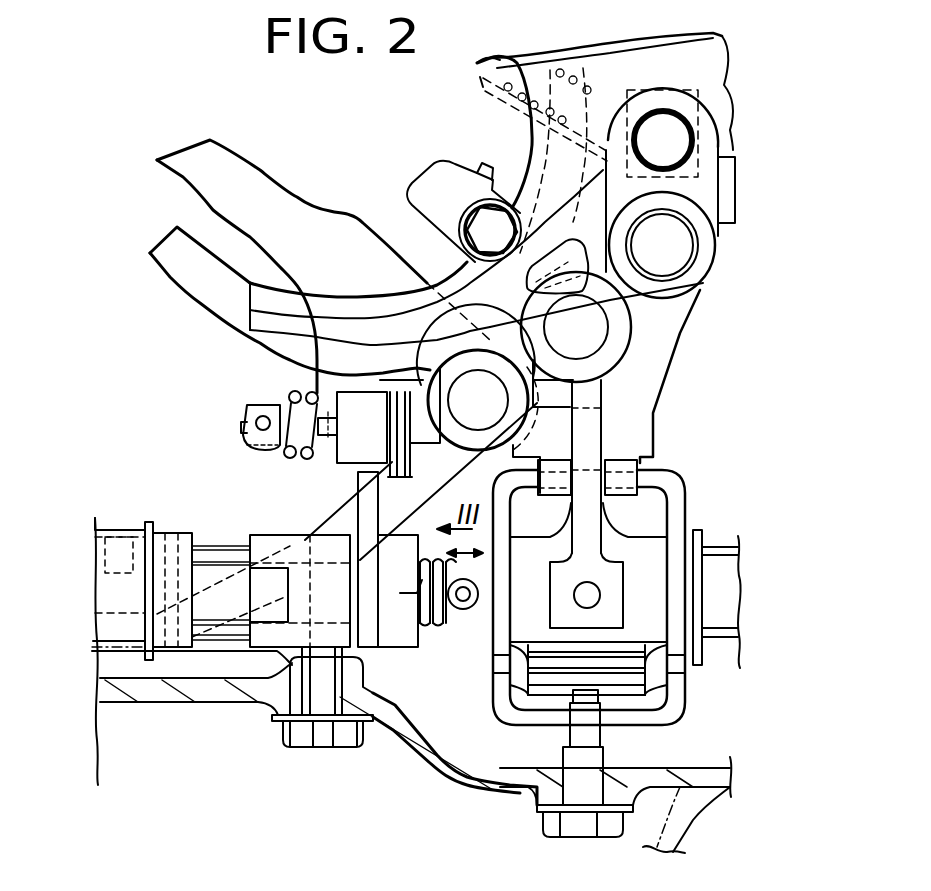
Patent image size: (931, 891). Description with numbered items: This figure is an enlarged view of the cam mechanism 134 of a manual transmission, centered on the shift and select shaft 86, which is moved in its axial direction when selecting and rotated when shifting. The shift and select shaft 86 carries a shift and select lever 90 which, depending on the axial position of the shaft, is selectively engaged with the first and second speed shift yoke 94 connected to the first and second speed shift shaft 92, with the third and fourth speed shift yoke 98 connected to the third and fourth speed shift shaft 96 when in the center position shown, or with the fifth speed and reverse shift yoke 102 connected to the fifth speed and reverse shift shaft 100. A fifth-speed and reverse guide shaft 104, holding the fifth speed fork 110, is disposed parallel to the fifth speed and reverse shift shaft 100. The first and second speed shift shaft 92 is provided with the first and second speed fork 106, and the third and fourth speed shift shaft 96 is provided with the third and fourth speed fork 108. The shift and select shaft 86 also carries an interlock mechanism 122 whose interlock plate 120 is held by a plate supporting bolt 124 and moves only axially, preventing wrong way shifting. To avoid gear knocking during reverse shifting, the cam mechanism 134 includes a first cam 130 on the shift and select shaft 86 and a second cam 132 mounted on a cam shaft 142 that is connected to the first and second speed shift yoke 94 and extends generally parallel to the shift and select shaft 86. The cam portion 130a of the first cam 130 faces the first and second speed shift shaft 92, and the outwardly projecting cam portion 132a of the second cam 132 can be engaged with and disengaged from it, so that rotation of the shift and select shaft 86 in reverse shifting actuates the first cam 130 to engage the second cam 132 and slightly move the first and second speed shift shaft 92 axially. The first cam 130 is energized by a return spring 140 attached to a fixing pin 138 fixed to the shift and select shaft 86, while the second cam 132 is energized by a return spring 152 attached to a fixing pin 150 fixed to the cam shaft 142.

The shift and select shaft 86 is at (227, 600).
The shift and select lever 90 is at (590, 447).
The 1st and 2nd speed shift shaft 92 is at (477, 395).
The 1st and 2nd speed shift yoke 94 is at (605, 458).
The 3rd and 4th speed shift shaft 96 is at (580, 333).
The 3rd and 4th speed shift yoke 98 is at (587, 402).
The 5th speed and reverse shift shaft 100 is at (663, 245).
The 5th speed and reverse shift yoke 102 is at (640, 463).
The 5th-speed and reverse guide shaft 104 is at (663, 139).
The 1st and 2nd speed fork 106 is at (200, 163).
The 3rd and 4th speed fork 108 is at (173, 272).
The 5-speed fork 110 is at (731, 147).
The interlock plate 120 is at (660, 708).
The interlock mechanism 122 is at (699, 684).
The plate supporting bolt 124 is at (552, 827).
The first cam 130 is at (390, 630).
The cam portion 130a is at (355, 478).
The second cam 132 is at (358, 453).
The cam portion 132a is at (400, 473).
The cam mechanism 134 is at (148, 360).
The fixing pin 138 is at (460, 612).
The return spring 140 is at (428, 630).
The cam shaft 142 is at (263, 408).
The fixing pin 150 is at (262, 423).
The return spring 152 is at (288, 457).